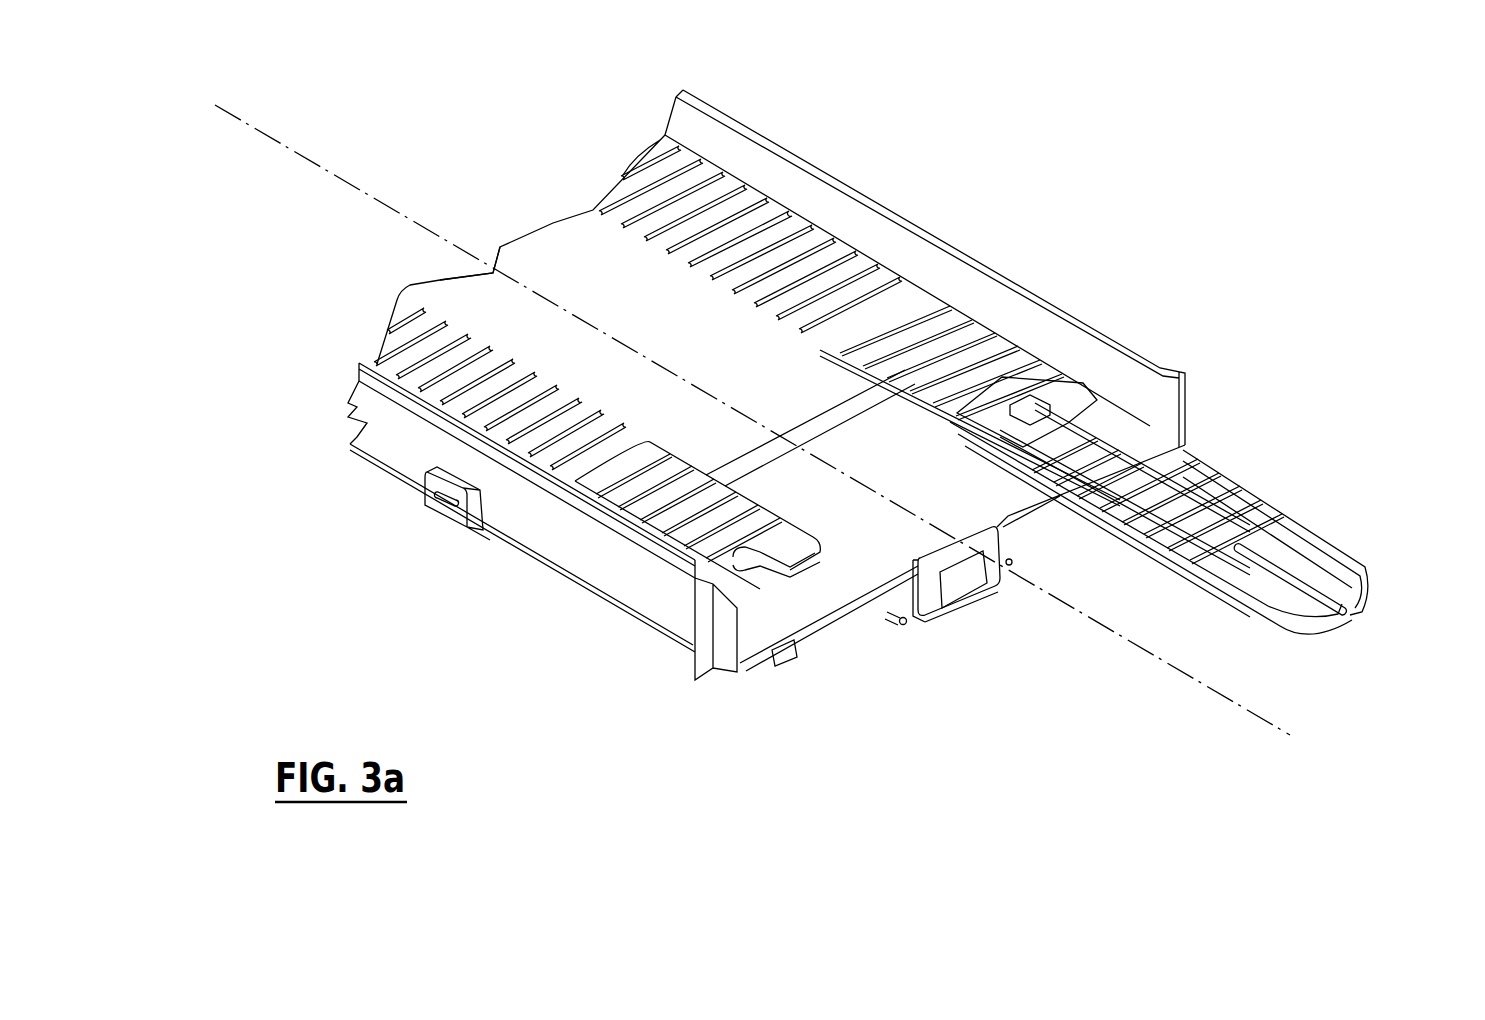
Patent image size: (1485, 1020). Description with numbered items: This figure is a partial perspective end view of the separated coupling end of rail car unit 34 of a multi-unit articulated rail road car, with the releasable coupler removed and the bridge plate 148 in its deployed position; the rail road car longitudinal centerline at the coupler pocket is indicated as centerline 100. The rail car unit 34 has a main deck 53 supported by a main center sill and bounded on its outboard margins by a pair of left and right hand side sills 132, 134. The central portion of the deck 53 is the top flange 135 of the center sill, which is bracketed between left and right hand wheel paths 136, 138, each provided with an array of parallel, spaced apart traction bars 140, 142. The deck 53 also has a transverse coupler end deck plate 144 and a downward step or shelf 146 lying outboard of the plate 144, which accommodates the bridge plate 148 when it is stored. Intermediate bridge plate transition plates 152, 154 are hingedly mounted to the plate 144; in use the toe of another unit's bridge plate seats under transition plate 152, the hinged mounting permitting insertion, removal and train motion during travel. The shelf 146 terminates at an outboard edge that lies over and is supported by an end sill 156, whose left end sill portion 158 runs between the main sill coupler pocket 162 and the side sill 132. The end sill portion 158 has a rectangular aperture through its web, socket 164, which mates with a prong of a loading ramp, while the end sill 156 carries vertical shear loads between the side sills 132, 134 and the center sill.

The rail car unit 34 is at (1093, 62).
The main deck 53 is at (540, 253).
The rail road car longitudinal centerline 100 is at (1227, 710).
The left hand side sill 132 is at (363, 440).
The right hand side sill 134 is at (743, 118).
The top flange of the center sill 135 is at (457, 287).
The left hand wheel path 136 is at (521, 450).
The right hand wheel path 138 is at (753, 197).
The traction bars 140 is at (800, 227).
The traction bars 142 is at (835, 244).
The transverse coupler end deck plate 144 is at (790, 375).
The shelf 146 is at (840, 510).
The bridge plate 148 is at (1335, 555).
The bridge plate transition plate 152 is at (717, 590).
The bridge plate transition plate 154 is at (1057, 381).
The end sill 156 is at (885, 610).
The left end sill portion 158 is at (763, 667).
The main sill coupler pocket 162 is at (962, 578).
The socket 164 is at (783, 652).